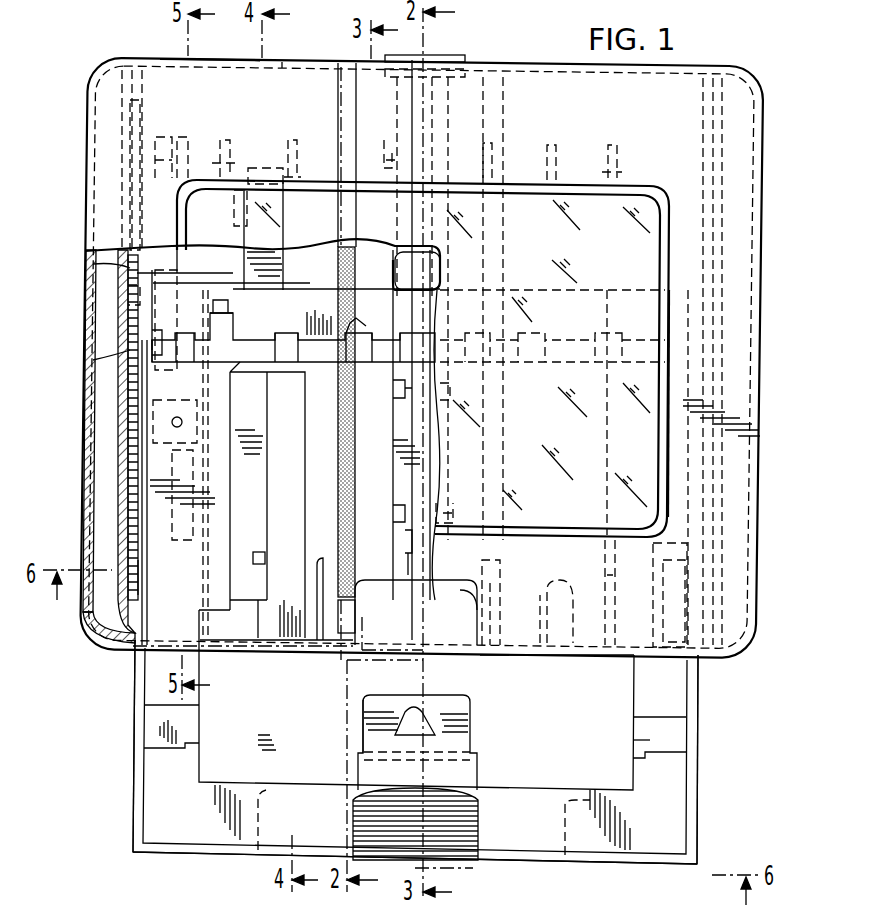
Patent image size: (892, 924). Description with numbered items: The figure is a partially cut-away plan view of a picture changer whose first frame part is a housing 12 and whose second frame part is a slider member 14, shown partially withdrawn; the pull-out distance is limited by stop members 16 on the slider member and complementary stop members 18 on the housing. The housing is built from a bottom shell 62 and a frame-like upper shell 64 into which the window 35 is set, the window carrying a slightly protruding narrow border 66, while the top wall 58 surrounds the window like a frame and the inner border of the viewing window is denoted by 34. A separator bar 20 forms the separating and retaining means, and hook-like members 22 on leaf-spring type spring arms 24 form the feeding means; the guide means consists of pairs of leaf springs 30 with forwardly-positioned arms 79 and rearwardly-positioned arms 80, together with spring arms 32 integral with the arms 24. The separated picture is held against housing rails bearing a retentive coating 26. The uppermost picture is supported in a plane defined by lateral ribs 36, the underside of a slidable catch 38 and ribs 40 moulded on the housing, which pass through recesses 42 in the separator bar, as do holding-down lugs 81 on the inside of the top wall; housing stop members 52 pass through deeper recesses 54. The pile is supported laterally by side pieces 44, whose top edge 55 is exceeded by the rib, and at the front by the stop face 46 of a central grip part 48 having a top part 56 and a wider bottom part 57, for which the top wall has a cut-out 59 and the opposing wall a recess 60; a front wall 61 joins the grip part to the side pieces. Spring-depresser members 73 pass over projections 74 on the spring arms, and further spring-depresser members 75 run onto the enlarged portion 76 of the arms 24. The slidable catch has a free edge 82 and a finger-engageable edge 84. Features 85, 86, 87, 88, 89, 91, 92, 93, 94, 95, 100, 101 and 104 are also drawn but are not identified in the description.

The housing 12 is at (124, 58).
The slider member 14 is at (136, 750).
The stop members 16 is at (100, 268).
The complementary stop members 18 is at (105, 620).
The separator bar 20 is at (320, 290).
The hook-like members 22 is at (260, 558).
The spring arms 24 is at (264, 492).
The retentive coating 26 is at (338, 434).
The leaf springs 30 is at (130, 440).
The spring arms 32 is at (242, 248).
The inner border of the viewing window 34 is at (570, 200).
The window 35 is at (452, 355).
The lateral ribs 36 is at (189, 138).
The slidable catch 38 is at (458, 702).
The ribs 40 is at (544, 160).
The recesses 42 is at (286, 352).
The side pieces 44 is at (140, 679).
The stop face 46 is at (357, 747).
The grip part 48 is at (443, 793).
The stop members 52 is at (616, 178).
The recesses 54 is at (222, 312).
The top edge 55 is at (140, 712).
The top part 56 is at (368, 834).
The bottom part 57 is at (594, 807).
The top wall 58 is at (556, 88).
The cut-out 59 is at (474, 612).
The recess 60 is at (516, 585).
The front wall 61 is at (190, 850).
The bottom shell 62 is at (86, 448).
The upper shell 64 is at (238, 72).
The narrow border 66 is at (670, 492).
The spring-depresser members 73 is at (242, 368).
The projections 74 is at (240, 193).
The spring-depresser members 75 is at (230, 605).
The enlarged portion 76 is at (220, 534).
The forwardly-positioned arms 79 is at (212, 474).
The rearwardly-positioned arms 80 is at (169, 274).
The holding-down lugs 81 is at (606, 578).
The free edge 82 is at (372, 694).
The finger-engageable edge 84 is at (470, 718).
The block 85 is at (400, 264).
The hooks 86 is at (387, 160).
The tab 87 is at (426, 60).
The rib 88 is at (280, 64).
The stop 89 is at (403, 543).
The block 91 is at (400, 580).
The ledge 92 is at (640, 741).
The cam 93 is at (394, 344).
The rail 94 is at (125, 537).
The notch 95 is at (163, 329).
The toothed rack 100 is at (126, 340).
The pawl 101 is at (124, 290).
The slot 104 is at (128, 575).